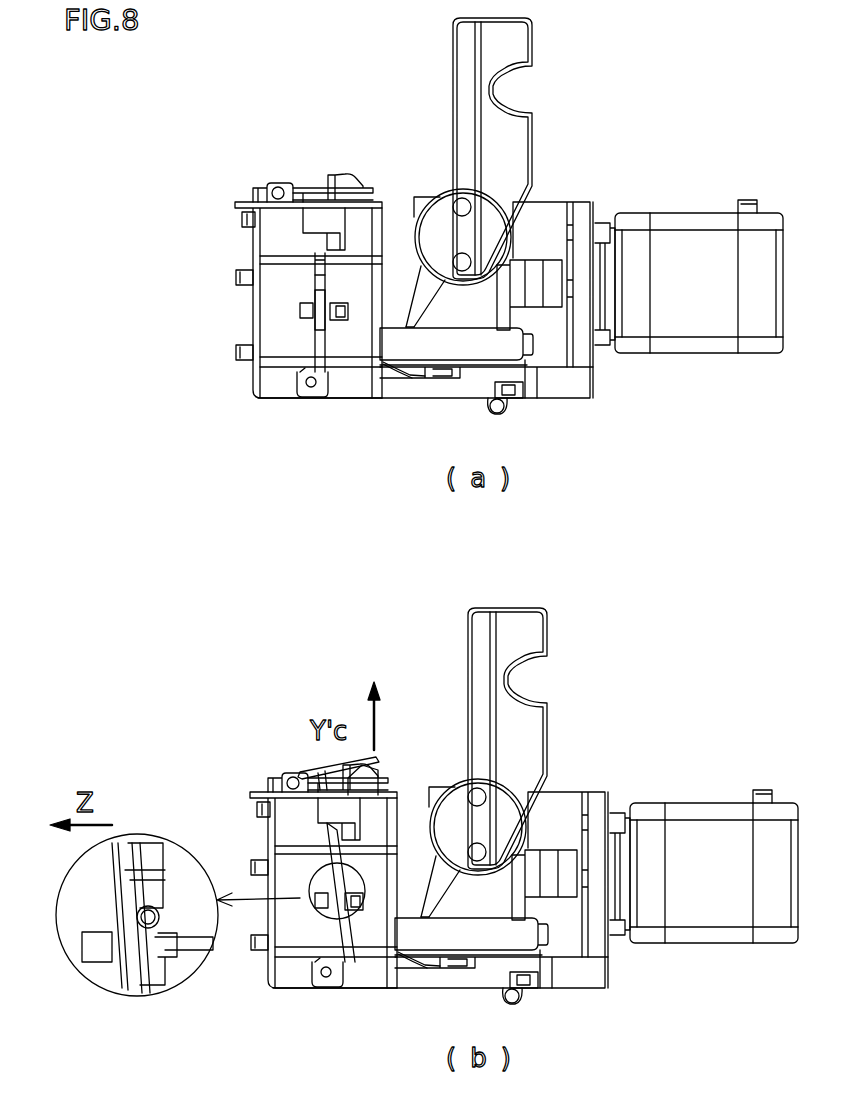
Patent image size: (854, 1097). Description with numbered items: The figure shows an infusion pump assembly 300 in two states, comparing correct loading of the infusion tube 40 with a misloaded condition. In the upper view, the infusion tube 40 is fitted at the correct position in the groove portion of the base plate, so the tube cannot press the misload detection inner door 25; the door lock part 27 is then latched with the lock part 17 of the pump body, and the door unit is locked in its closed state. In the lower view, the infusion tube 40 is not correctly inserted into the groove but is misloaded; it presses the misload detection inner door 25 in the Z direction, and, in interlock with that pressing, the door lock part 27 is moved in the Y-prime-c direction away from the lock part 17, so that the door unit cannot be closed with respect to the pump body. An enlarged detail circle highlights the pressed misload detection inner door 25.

The clamping device 300 is at (276, 155).
The infusion tube 40 is at (343, 317).
The door lock part 27 is at (340, 762).
The lock part 17 is at (370, 778).
The misload detection inner door 25 is at (293, 870).